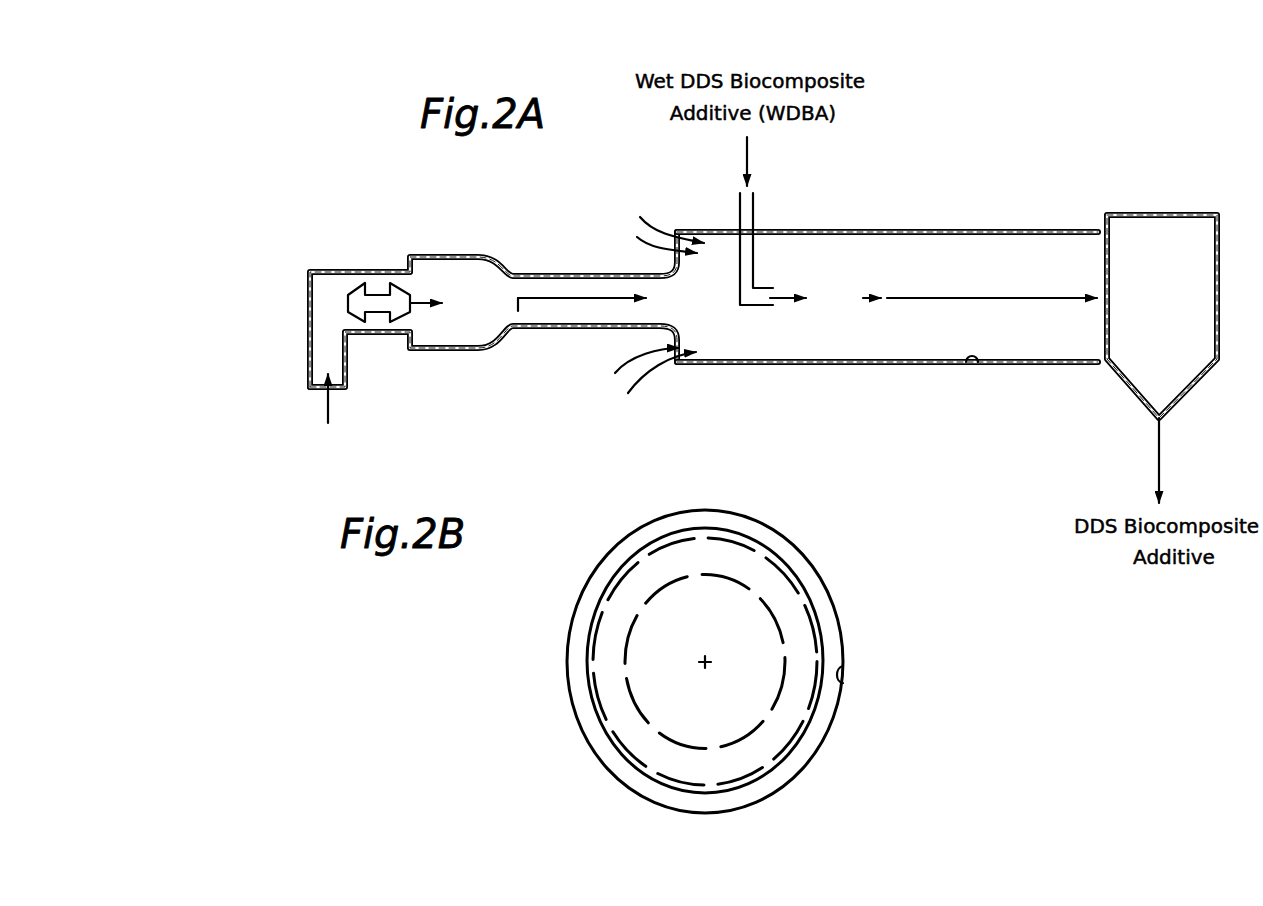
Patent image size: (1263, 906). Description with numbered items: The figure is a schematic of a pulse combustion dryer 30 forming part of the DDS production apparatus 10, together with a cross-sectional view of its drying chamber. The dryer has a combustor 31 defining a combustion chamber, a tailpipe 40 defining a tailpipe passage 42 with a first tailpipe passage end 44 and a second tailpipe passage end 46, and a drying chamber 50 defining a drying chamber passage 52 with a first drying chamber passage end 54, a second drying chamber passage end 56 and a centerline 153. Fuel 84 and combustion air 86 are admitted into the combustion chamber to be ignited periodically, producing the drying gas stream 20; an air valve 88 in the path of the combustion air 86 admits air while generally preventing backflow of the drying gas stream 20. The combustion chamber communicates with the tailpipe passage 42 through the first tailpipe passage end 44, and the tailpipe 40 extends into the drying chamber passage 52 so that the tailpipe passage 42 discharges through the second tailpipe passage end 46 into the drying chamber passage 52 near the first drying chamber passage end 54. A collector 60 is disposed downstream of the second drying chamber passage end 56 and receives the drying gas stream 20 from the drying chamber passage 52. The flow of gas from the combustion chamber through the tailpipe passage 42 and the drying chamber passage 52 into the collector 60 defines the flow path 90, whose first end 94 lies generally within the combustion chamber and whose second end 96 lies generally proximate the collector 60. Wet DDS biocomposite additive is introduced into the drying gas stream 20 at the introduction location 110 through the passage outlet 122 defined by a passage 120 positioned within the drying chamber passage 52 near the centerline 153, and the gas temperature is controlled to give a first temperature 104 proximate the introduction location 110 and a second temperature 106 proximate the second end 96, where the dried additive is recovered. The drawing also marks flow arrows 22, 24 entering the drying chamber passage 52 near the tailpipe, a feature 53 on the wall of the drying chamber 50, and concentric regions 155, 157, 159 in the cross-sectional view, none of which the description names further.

In FIG. 2A, the DDS production apparatus 10 is at (1082, 163).
In FIG. 2B, the DDS production apparatus 10 is at (965, 606).
In FIG. 2A, the drying gas stream 20 is at (557, 298).
In FIG. 2B, the drying gas stream 20 is at (665, 692).
In FIG. 2A, the secondary air stream 22 is at (460, 322).
In FIG. 2B, the secondary air stream 22 is at (663, 758).
In FIG. 2A, the entrained air flow 24 is at (643, 217).
In FIG. 2B, the entrained air flow 24 is at (705, 797).
In FIG. 2A, the pulse combustion dryer 30 is at (289, 262).
In FIG. 2B, the pulse combustion dryer 30 is at (556, 668).
In FIG. 2A, the combustor 31 is at (430, 351).
In FIG. 2A, the tailpipe 40 is at (563, 328).
In FIG. 2A, the tailpipe passage 42 is at (580, 282).
In FIG. 2A, the first tailpipe passage end 44 is at (510, 273).
In FIG. 2A, the second tailpipe passage end 46 is at (680, 333).
In FIG. 2A, the drying chamber 50 is at (923, 362).
In FIG. 2B, the drying chamber 50 is at (838, 617).
In FIG. 2A, the drying chamber passage 52 is at (878, 343).
In FIG. 2B, the drying chamber passage 52 is at (763, 542).
In FIG. 2A, the conduit opening 53 is at (972, 351).
In FIG. 2B, the conduit opening 53 is at (843, 667).
In FIG. 2A, the first drying chamber passage end 54 is at (676, 363).
In FIG. 2A, the second drying chamber passage end 56 is at (1097, 361).
In FIG. 2A, the collector 60 is at (1180, 231).
In FIG. 2A, the fuel 84 is at (432, 297).
In FIG. 2A, the combustion air 86 is at (331, 420).
In FIG. 2A, the air valve 88 is at (363, 297).
In FIG. 2A, the flow path 90 is at (573, 299).
In FIG. 2A, the first end 94 is at (518, 322).
In FIG. 2A, the second end 96 is at (1060, 256).
In FIG. 2A, the first temperature 104 is at (773, 312).
In FIG. 2A, the second temperature 106 is at (1098, 318).
In FIG. 2A, the introduction location 110 is at (763, 312).
In FIG. 2A, the passage 120 is at (748, 217).
In FIG. 2A, the passage outlet 122 is at (775, 297).
In FIG. 2A, the centerline 153 is at (988, 298).
In FIG. 2B, the centerline 153 is at (708, 658).
In FIG. 2B, the outer flow layer 155 is at (675, 597).
In FIG. 2B, the middle flow layer 157 is at (630, 595).
In FIG. 2B, the inner flow layer 159 is at (590, 607).